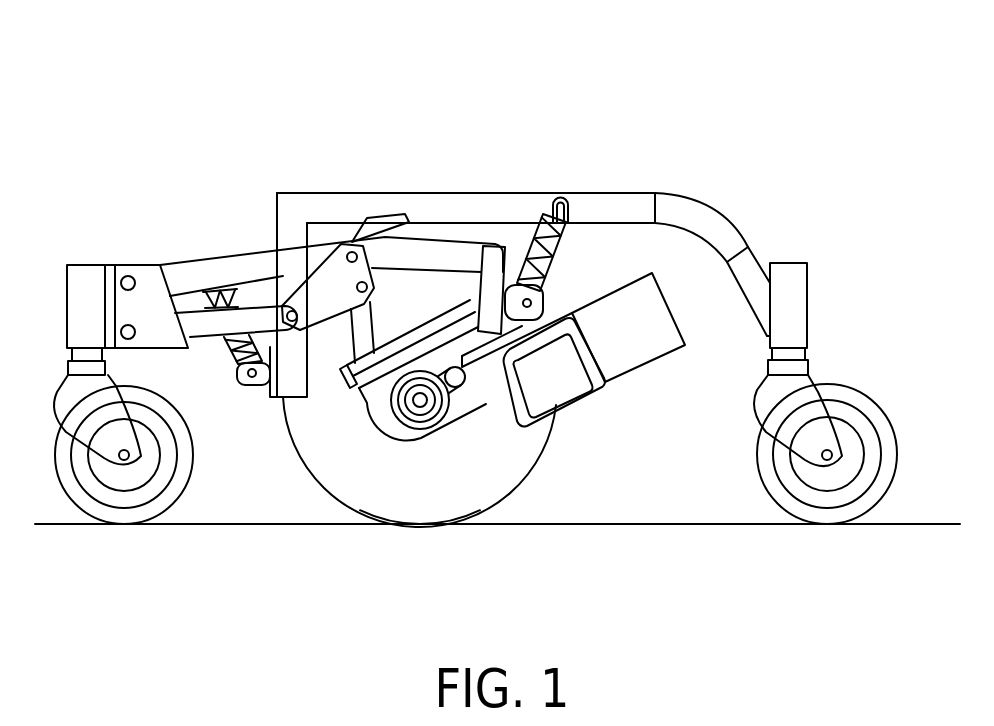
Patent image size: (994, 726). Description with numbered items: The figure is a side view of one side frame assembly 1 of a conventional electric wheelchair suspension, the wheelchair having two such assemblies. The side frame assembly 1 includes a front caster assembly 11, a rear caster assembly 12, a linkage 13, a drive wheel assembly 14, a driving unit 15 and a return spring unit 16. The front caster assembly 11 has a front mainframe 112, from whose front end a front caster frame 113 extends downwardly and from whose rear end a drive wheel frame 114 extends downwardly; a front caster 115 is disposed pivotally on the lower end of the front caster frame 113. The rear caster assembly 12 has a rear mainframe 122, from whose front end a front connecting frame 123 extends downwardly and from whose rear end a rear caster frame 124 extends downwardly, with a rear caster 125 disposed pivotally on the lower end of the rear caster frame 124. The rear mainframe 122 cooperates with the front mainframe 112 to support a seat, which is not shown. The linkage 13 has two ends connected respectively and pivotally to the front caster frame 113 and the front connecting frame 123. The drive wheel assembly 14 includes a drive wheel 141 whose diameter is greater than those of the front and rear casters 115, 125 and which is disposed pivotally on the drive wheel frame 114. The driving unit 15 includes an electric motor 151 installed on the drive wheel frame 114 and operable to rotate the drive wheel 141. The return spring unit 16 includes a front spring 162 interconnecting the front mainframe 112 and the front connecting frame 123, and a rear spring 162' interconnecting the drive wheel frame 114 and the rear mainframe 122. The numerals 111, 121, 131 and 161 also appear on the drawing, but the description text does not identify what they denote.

The side frame assembly 1 is at (426, 125).
The front caster assembly 11 is at (247, 240).
The upper arm 111 is at (212, 246).
The front mainframe 112 is at (289, 206).
The front caster frame 113 is at (80, 275).
The drive wheel frame 114 is at (482, 282).
The front caster 115 is at (125, 518).
The rear caster assembly 12 is at (690, 176).
The top frame bar 121 is at (595, 176).
The rear mainframe 122 is at (487, 197).
The front connecting frame 123 is at (295, 397).
The rear caster frame 124 is at (750, 250).
The rear caster 125 is at (860, 397).
The linkage 13 is at (215, 364).
The lower arm bar 131 is at (200, 328).
The drive wheel assembly 14 is at (512, 512).
The drive wheel 141 is at (368, 510).
The driving unit 15 is at (597, 410).
The electric motor 151 is at (637, 370).
The return spring unit 16 is at (256, 410).
The first spring 161 is at (190, 288).
The front spring 162 is at (264, 418).
The rear spring 162' is at (581, 259).